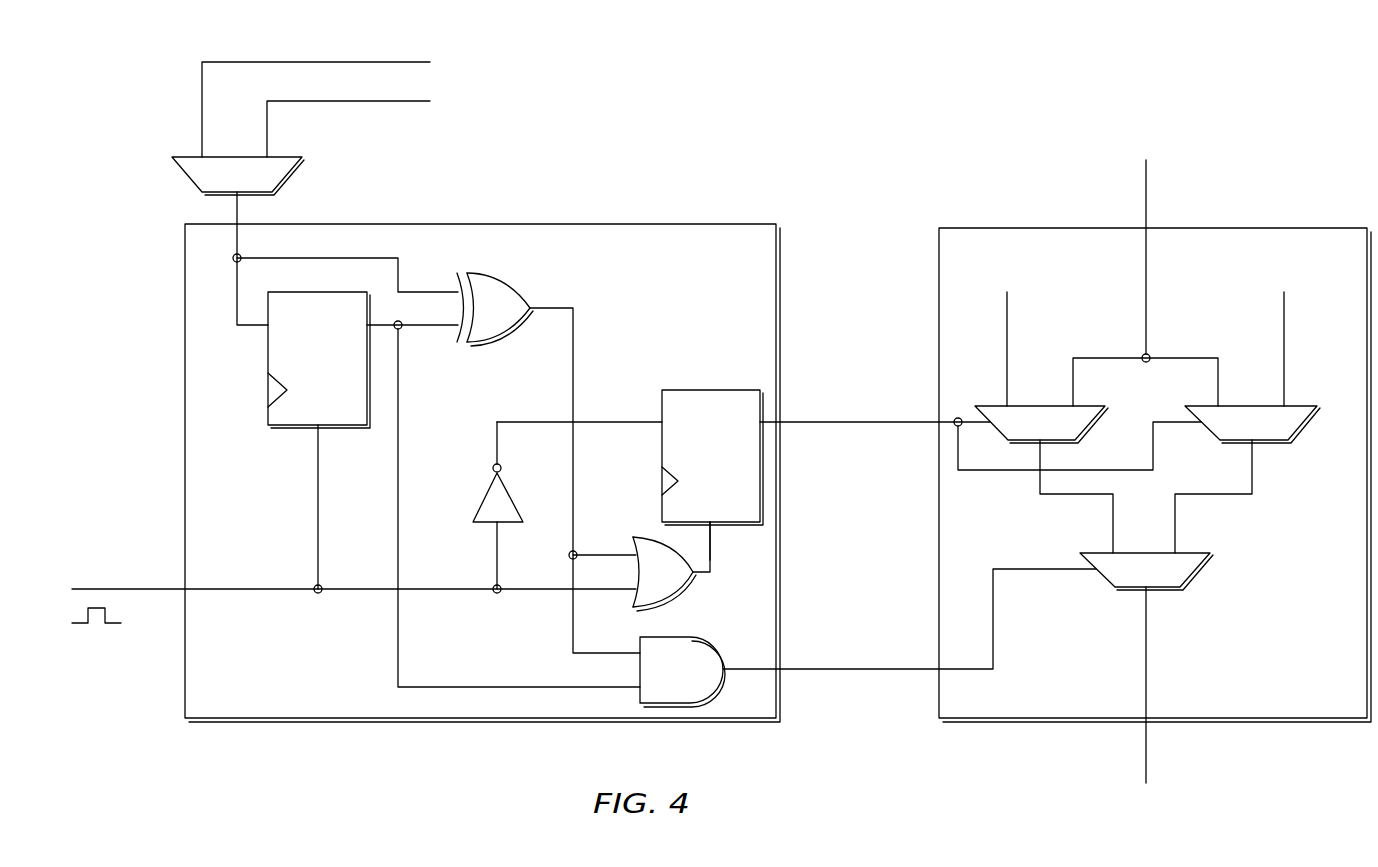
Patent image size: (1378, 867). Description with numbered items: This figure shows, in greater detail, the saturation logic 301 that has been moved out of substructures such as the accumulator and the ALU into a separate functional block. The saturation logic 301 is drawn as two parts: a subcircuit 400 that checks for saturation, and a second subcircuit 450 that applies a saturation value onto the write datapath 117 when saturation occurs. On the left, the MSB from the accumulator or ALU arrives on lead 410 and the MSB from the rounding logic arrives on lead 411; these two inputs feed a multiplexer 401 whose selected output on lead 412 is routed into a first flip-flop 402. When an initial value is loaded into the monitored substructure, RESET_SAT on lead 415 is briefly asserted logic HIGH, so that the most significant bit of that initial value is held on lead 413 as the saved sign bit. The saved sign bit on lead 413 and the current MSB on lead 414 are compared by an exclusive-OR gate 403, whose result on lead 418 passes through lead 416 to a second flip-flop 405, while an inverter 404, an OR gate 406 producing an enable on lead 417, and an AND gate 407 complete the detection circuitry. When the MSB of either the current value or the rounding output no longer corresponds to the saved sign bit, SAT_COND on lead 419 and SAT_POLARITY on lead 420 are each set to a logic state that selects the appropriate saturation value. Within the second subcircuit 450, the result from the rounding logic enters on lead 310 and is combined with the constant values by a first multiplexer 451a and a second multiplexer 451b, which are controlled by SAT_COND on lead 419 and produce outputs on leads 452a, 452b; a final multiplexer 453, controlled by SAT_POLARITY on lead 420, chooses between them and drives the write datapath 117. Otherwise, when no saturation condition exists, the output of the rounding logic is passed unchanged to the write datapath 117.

The saturation logic 301 is at (713, 135).
The result from rounding logic 310 is at (1143, 176).
The subcircuit 400 is at (580, 224).
The multiplexer 401 is at (290, 178).
The first flip-flop 402 is at (268, 340).
The XOR gate 403 is at (512, 288).
The inverter 404 is at (518, 511).
The second flip-flop 405 is at (712, 390).
The OR gate 406 is at (690, 578).
The AND gate 407 is at (736, 647).
The lead 410 is at (201, 114).
The MSB from rounding logic 411 is at (348, 101).
The selected MSB signal 412 is at (239, 212).
The lead 413 is at (377, 322).
The MSB signal to XOR gate 414 is at (308, 258).
The RESET_SAT signal 415 is at (268, 589).
The XOR output to flip-flop 416 is at (636, 423).
The enable signal 417 is at (711, 530).
The XOR gate output signal 418 is at (555, 307).
The lead 419 is at (865, 423).
The lead 420 is at (847, 669).
The second subcircuit 450 is at (1290, 228).
The first multiplexer 451a is at (1100, 419).
The second multiplexer 451b is at (1312, 420).
The first multiplexer output 452a is at (1093, 495).
The second multiplexer output 452b is at (1200, 495).
The output multiplexer 453 is at (1197, 573).
The write datapath 117 is at (1147, 732).